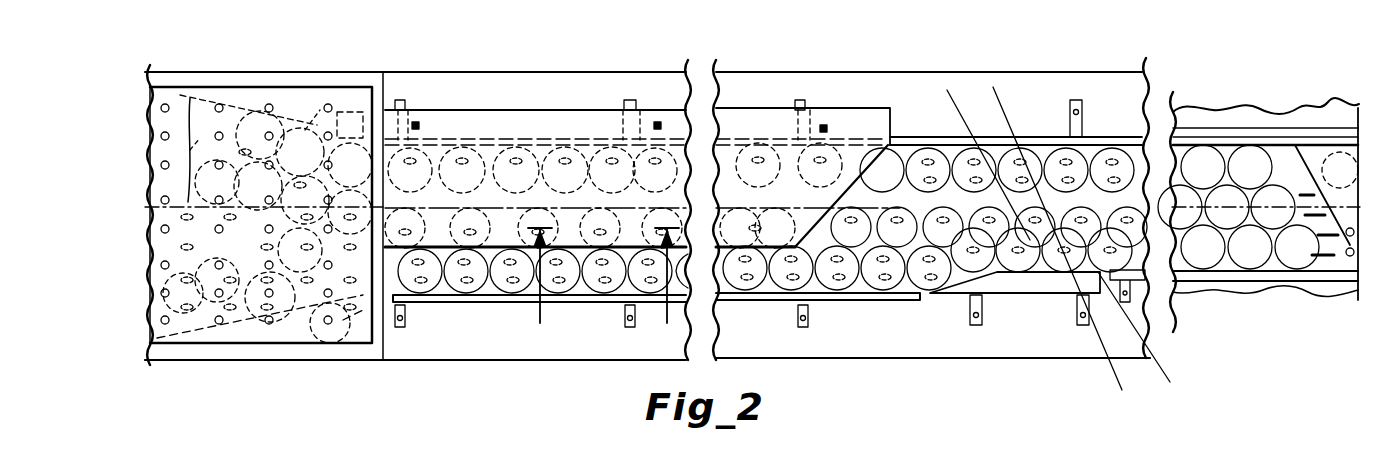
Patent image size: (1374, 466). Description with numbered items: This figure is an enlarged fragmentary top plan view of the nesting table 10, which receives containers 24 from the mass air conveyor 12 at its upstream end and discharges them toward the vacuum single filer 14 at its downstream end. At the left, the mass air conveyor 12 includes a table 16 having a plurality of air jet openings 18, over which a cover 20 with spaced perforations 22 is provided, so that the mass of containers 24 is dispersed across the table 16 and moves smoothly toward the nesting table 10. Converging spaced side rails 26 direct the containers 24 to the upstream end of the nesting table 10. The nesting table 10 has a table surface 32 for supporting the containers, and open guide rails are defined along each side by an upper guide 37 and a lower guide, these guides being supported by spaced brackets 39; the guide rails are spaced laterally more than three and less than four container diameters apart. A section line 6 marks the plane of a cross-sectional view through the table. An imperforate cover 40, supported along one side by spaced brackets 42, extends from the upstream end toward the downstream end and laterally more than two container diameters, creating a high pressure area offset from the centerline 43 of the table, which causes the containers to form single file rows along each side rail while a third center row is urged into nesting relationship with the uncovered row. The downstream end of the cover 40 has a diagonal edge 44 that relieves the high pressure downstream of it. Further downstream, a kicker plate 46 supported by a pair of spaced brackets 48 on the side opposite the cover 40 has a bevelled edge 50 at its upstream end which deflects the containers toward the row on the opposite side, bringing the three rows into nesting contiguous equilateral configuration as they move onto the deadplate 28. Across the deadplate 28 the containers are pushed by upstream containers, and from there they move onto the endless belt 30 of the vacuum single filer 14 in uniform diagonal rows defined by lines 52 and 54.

The section line 6- 6 is at (603, 290).
The nesting table 10 is at (436, 402).
The mass air conveyor 12 is at (236, 396).
The vacuum single filer 14 is at (1254, 320).
The table 16 is at (180, 90).
The air jet openings 18 is at (261, 371).
The cover 20 is at (306, 300).
The spaced perforations 22 is at (332, 168).
The containers 24 is at (261, 103).
The converging spaced side rails 26 is at (374, 80).
The deadplate 28 is at (1285, 135).
The endless belt 30 is at (1345, 300).
The table surface 32 is at (480, 345).
The upper guide 37 is at (482, 100).
The spaced brackets 39 is at (400, 100).
The imperforate cover 40 is at (840, 115).
The spaced brackets 42 is at (656, 110).
The centerline 43 is at (200, 88).
The diagonal edge 44 is at (880, 200).
The kicker plate 46 is at (1000, 305).
The spaced brackets 48 is at (975, 330).
The bevelled edge 50 is at (952, 290).
The line 52 is at (1117, 386).
The line 54 is at (1172, 380).